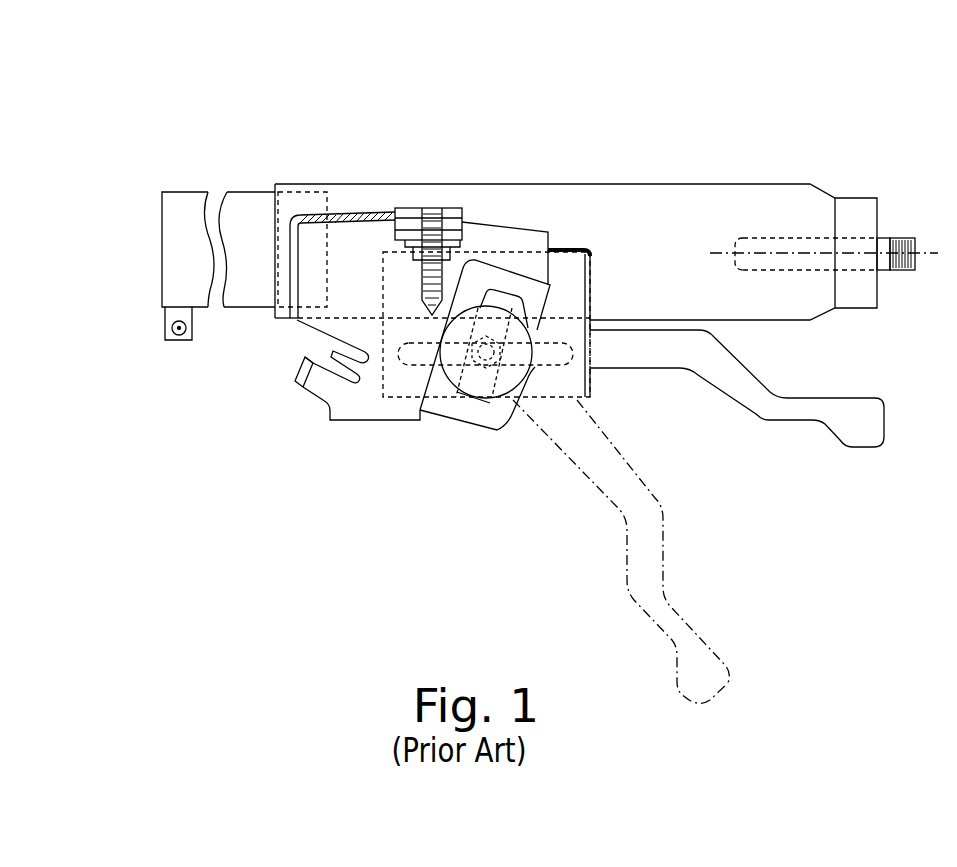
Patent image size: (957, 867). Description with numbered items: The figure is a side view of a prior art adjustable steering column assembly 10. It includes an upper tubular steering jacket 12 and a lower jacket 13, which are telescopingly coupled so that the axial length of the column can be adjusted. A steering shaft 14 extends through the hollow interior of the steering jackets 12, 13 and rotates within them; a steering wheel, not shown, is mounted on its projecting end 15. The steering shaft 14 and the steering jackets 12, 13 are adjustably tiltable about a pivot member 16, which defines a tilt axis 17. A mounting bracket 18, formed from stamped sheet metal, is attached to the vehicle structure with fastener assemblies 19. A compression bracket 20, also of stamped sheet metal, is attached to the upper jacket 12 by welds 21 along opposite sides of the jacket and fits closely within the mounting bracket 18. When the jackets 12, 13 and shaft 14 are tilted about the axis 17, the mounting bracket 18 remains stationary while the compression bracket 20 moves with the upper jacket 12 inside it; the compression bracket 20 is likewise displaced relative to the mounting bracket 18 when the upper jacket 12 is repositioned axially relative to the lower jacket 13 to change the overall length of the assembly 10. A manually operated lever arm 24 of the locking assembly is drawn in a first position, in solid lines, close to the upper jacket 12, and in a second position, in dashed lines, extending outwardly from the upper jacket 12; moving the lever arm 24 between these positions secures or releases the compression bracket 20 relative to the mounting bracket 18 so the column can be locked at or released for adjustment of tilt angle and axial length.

The adjustable steering column assembly 10 is at (435, 142).
The upper tubular steering jacket 12 is at (753, 195).
The lower jacket 13 is at (245, 192).
The steering shaft 14 is at (882, 272).
The projecting end 15 is at (908, 270).
The pivot member 16 is at (190, 343).
The tilt axis 17 is at (172, 329).
The mounting bracket 18 is at (397, 417).
The fastener assemblies 19 is at (408, 208).
The compression bracket 20 is at (580, 400).
The welds 21 is at (570, 247).
The lever arm 24 is at (778, 420).